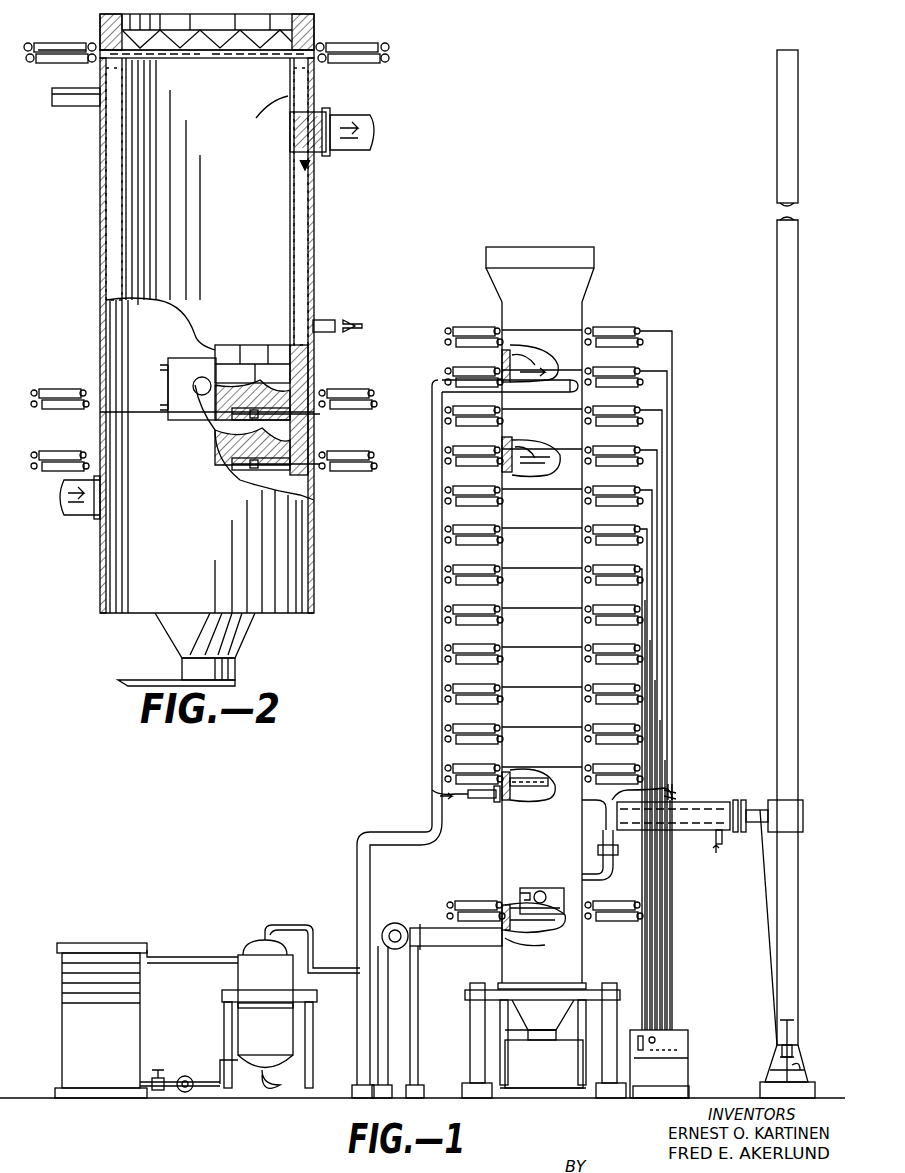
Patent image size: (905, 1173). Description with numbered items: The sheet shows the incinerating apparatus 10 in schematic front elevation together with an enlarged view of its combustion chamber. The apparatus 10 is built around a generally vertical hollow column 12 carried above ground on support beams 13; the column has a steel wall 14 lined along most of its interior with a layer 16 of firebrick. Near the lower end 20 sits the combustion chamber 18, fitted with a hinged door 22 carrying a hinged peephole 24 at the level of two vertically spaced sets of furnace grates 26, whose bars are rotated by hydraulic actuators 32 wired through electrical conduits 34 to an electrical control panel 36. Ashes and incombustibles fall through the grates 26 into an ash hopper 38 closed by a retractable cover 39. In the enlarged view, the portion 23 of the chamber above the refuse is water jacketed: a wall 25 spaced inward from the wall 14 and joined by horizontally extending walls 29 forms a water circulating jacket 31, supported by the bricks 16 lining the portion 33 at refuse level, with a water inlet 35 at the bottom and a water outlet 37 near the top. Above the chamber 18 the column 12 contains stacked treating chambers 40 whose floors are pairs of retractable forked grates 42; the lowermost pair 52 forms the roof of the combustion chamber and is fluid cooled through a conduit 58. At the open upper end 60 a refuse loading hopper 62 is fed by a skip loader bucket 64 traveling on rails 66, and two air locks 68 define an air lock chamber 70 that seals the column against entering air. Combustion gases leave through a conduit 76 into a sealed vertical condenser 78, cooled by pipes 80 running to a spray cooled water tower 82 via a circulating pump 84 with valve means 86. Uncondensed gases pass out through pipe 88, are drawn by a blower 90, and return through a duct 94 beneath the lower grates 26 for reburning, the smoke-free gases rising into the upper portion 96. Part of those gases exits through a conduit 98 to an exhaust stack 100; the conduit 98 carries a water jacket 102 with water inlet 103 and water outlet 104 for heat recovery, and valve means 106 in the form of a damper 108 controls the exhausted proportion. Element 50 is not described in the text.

In FIG. 1, the incinerating apparatus 10 is at (548, 564).
In FIG. 1, the hollow column 12 is at (556, 526).
In FIG. 1, the support beams 13 is at (470, 1010).
In FIG. 2, the wall 14 is at (100, 86).
In FIG. 1, the wall 14 is at (575, 554).
In FIG. 2, the layer of refractory material 16 is at (100, 22).
In FIG. 1, the layer of refractory material 16 is at (502, 372).
In FIG. 2, the combustion chamber 18 is at (312, 162).
In FIG. 1, the combustion chamber 18 is at (570, 963).
In FIG. 2, the lower end 20 is at (100, 588).
In FIG. 1, the lower end 20 is at (510, 963).
In FIG. 2, the hinged door 22 is at (168, 385).
In FIG. 1, the hinged door 22 is at (520, 890).
In FIG. 2, the portion of combustion chamber 23 is at (280, 225).
In FIG. 2, the hinged peephole 24 is at (202, 377).
In FIG. 1, the hinged peephole 24 is at (540, 890).
In FIG. 2, the wall 25 is at (306, 256).
In FIG. 2, the furnace grates 26 is at (305, 430).
In FIG. 1, the furnace grates 26 is at (505, 910).
In FIG. 2, the horizontally extending walls 29 is at (310, 300).
In FIG. 2, the water circulating jacket 31 is at (312, 187).
In FIG. 2, the hydraulic actuator 32 is at (365, 417).
In FIG. 1, the hydraulic actuator 32 is at (622, 926).
In FIG. 2, the portion of combustion chamber 33 is at (312, 378).
In FIG. 1, the electrical conduits 34 is at (665, 655).
In FIG. 2, the water inlet 35 is at (320, 320).
In FIG. 1, the water inlet 35 is at (606, 880).
In FIG. 1, the electrical control panel 36 is at (688, 1038).
In FIG. 2, the water outlet 37 is at (88, 106).
In FIG. 1, the water outlet 37 is at (440, 780).
In FIG. 2, the ash hopper 38 is at (168, 624).
In FIG. 2, the retractable cover 39 is at (133, 678).
In FIG. 1, the treating chambers 40 is at (570, 592).
In FIG. 1, the forked grates 42 is at (508, 438).
In FIG. 2, the rod end 50 is at (56, 62).
In FIG. 2, the lowermost pair of forked grates 52 is at (100, 30).
In FIG. 1, the lowermost pair of forked grates 52 is at (508, 760).
In FIG. 1, the conduit 58 is at (515, 795).
In FIG. 1, the upper end 60 is at (583, 322).
In FIG. 1, the refuse loading hopper 62 is at (496, 280).
In FIG. 1, the skip loader bucket 64 is at (505, 1055).
In FIG. 1, the rails 66 is at (505, 1030).
In FIG. 1, the air locks 68 is at (502, 348).
In FIG. 1, the air lock chamber 70 is at (570, 357).
In FIG. 1, the conduit 76 is at (432, 558).
In FIG. 1, the condenser 78 is at (240, 1012).
In FIG. 1, the pipes 80 is at (210, 962).
In FIG. 1, the water tower 82 is at (70, 1046).
In FIG. 1, the circulating pump 84 is at (190, 1076).
In FIG. 1, the valve means 86 is at (152, 1062).
In FIG. 1, the pipe 88 is at (315, 975).
In FIG. 1, the blower 90 is at (400, 912).
In FIG. 2, the duct 94 is at (78, 517).
In FIG. 1, the duct 94 is at (447, 922).
In FIG. 2, the upper portion 96 is at (312, 95).
In FIG. 2, the conduit 98 is at (340, 107).
In FIG. 1, the conduit 98 is at (748, 805).
In FIG. 1, the exhaust stack 100 is at (798, 448).
In FIG. 1, the water jacket 102 is at (686, 803).
In FIG. 1, the water inlet 103 is at (716, 838).
In FIG. 1, the water outlet 104 is at (668, 782).
In FIG. 1, the valve means 106 is at (770, 782).
In FIG. 1, the damper 108 is at (760, 830).